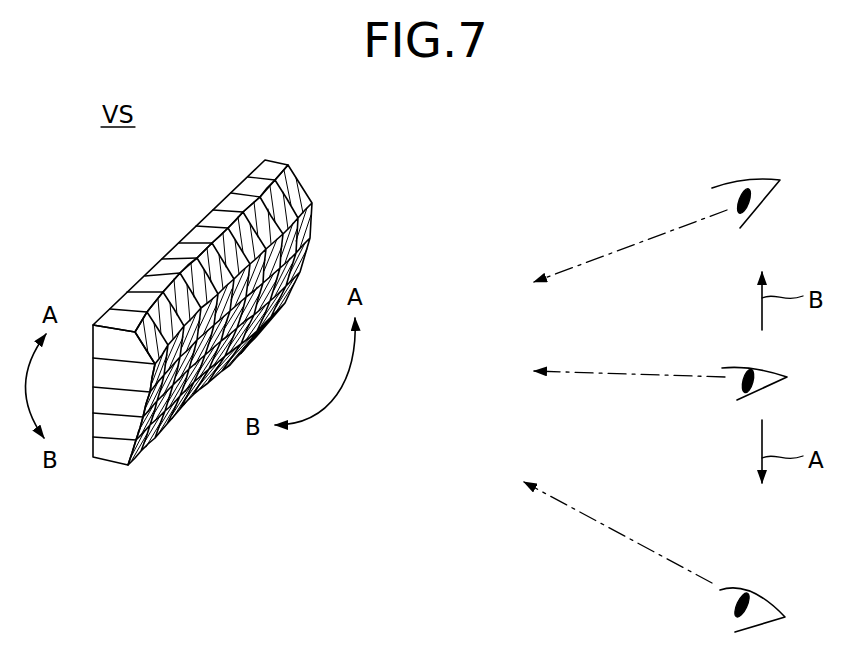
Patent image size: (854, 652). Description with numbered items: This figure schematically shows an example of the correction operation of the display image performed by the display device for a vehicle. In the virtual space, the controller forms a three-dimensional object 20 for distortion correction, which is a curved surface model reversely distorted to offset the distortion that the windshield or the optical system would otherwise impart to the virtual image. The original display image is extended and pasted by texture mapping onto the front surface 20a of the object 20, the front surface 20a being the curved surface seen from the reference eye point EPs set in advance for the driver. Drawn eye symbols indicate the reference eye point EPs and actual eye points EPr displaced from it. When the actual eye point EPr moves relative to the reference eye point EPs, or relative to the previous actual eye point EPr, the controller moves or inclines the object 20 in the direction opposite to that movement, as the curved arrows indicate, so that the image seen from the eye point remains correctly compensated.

The 3D object for distortion correction 20 is at (334, 188).
The front surface 20a is at (310, 193).
The actual eye point EPr is at (730, 202).
The reference eye point EPs is at (722, 370).